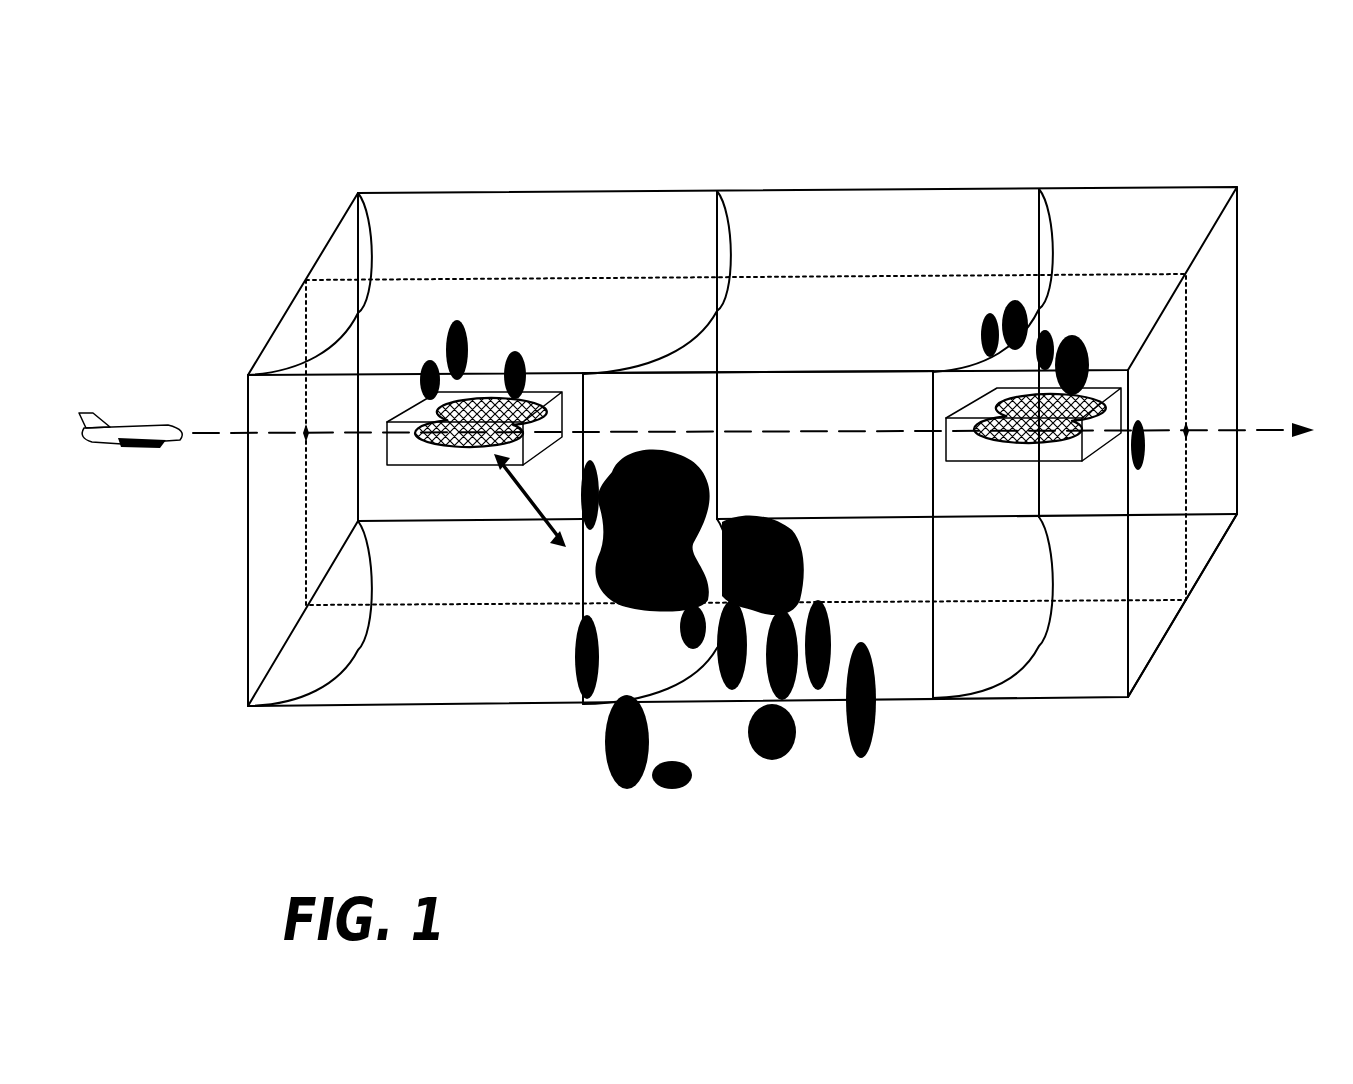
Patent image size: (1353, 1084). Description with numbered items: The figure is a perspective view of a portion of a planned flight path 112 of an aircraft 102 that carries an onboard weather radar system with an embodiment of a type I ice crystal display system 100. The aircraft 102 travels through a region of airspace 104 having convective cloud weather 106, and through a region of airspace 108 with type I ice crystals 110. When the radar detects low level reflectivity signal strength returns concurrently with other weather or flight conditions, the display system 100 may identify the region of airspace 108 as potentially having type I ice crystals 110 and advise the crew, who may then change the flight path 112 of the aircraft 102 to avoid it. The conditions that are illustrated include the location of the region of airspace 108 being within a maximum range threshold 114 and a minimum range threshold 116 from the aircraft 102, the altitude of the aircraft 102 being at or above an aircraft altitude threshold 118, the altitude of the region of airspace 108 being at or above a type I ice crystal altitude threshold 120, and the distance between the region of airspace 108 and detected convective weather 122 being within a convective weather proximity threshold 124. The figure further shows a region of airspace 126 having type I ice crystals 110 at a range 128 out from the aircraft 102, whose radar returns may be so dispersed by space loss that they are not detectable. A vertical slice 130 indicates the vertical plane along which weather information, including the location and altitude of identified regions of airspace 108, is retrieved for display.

The type I ice crystal display system 100 is at (130, 428).
The aircraft 102 is at (145, 450).
The region of airspace 104 is at (698, 138).
The convective cloud weather 106 is at (764, 472).
The region of airspace 108 is at (497, 390).
The type I ice crystals 110 is at (430, 452).
The flight path 112 is at (212, 434).
The maximum range threshold 114 is at (732, 218).
The minimum range threshold 116 is at (372, 219).
The aircraft altitude threshold 118 is at (1223, 573).
The type I ice crystal altitude threshold 120 is at (216, 647).
The detected convective weather 122 is at (685, 802).
The convective weather proximity threshold 124 is at (532, 503).
The region of airspace 126 is at (1088, 462).
The range 128 is at (1053, 242).
The vertical slice 130 is at (1198, 356).